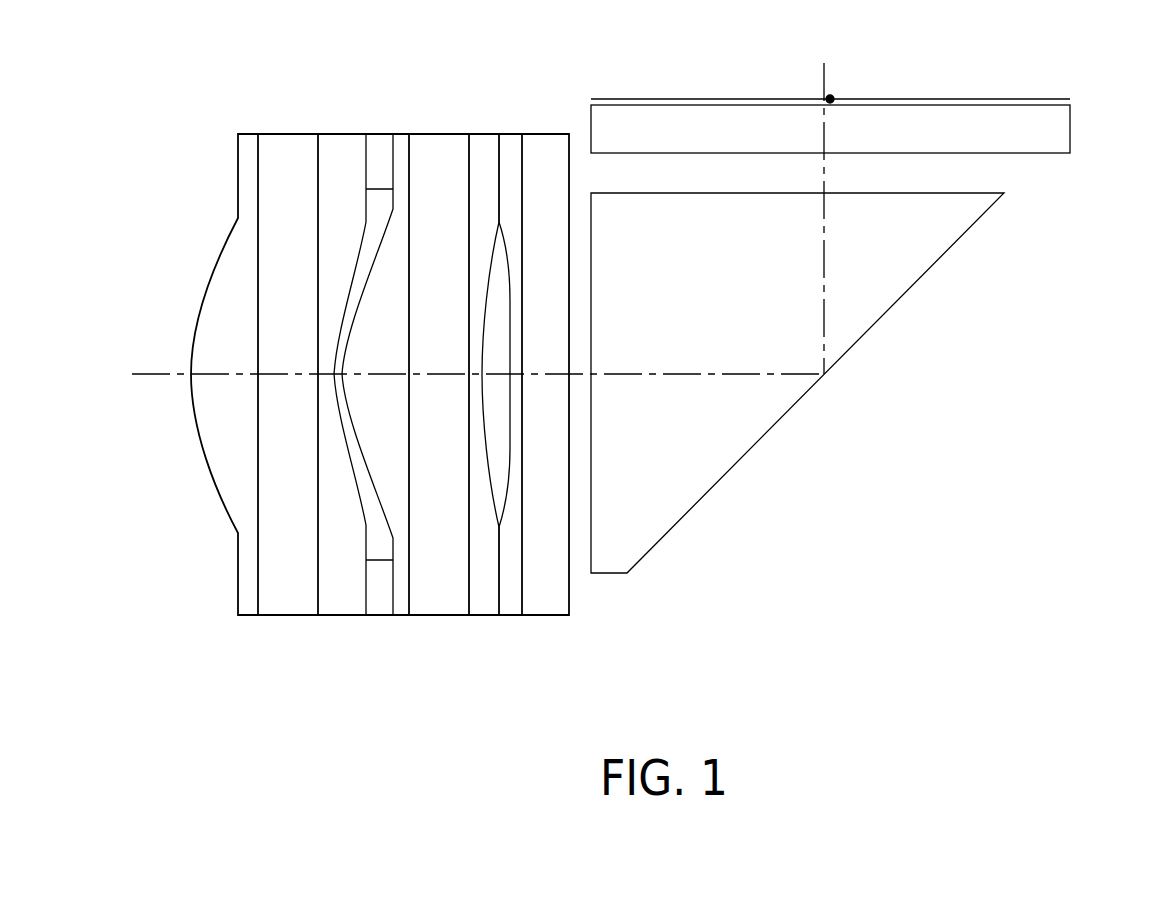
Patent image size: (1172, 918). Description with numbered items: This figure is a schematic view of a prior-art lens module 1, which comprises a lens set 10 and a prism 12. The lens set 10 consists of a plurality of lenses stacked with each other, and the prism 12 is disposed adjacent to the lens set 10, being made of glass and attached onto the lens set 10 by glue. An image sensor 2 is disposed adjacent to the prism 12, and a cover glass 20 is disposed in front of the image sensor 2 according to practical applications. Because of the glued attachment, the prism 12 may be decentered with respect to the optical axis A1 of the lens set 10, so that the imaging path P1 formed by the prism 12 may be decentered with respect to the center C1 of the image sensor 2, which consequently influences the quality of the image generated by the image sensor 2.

The lens module 1 is at (595, 615).
The lens set 10 is at (545, 134).
The prism 12 is at (925, 255).
The image sensor 2 is at (1038, 99).
The cover glass 20 is at (1070, 119).
The optical axis A1 is at (143, 374).
The imaging path P1 is at (693, 374).
The center C1 is at (832, 98).